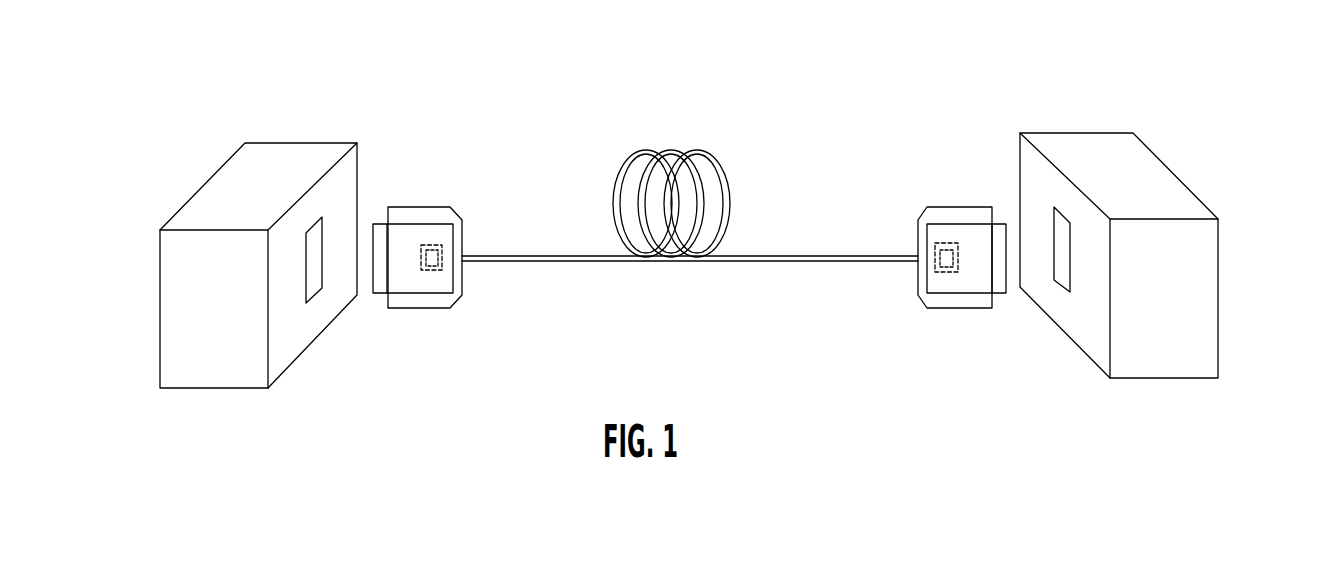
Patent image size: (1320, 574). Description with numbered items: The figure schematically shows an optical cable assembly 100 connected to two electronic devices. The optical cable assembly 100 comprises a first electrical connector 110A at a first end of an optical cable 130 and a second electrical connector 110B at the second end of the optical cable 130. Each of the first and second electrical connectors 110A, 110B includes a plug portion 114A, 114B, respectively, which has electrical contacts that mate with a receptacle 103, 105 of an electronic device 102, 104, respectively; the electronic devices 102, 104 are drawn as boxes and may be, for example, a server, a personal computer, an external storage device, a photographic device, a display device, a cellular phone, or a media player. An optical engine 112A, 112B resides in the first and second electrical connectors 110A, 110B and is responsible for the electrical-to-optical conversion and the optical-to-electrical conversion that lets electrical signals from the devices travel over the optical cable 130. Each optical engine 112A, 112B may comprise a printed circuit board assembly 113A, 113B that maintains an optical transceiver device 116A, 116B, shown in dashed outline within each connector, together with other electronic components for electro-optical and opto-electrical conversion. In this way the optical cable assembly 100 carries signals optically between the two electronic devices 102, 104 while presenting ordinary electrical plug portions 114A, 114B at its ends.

The optical cable assembly 100 is at (240, 72).
The electronic device 102 is at (181, 190).
The receptacle 103 is at (318, 290).
The electronic device 104 is at (1183, 166).
The receptacle 105 is at (1070, 290).
The first electrical connector 110A is at (455, 229).
The second electrical connector 110B is at (936, 224).
The optical engine 112A is at (409, 213).
The optical engine 112B is at (971, 209).
The printed circuit board assembly 113A is at (400, 282).
The printed circuit board assembly 113B is at (973, 282).
The plug portion 114A is at (378, 224).
The plug portion 114B is at (1000, 223).
The optical transceiver device 116A is at (446, 231).
The optical transceiver device 116B is at (936, 227).
The optical cable 130 is at (603, 274).